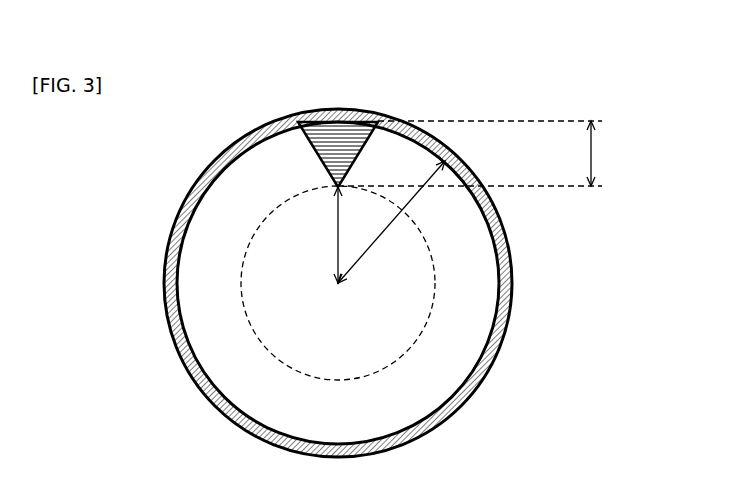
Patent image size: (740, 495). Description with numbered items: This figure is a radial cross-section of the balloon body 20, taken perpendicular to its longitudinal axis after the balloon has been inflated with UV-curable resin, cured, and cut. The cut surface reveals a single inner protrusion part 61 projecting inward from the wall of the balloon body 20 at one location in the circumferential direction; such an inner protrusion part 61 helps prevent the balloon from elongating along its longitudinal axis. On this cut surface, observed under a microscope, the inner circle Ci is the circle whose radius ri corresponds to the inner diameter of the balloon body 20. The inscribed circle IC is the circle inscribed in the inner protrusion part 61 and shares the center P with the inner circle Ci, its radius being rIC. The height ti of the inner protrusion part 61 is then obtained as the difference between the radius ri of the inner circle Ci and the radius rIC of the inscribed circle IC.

The balloon body 20 is at (344, 283).
The inner protrusion part 61 is at (298, 124).
The inscribed circle IC is at (253, 335).
The center P is at (340, 285).
The radius of the inscribed circle rIC is at (338, 228).
The radius of the inner circle ri is at (415, 197).
The inner circle Ci is at (510, 298).
The height of the inner protrusion part ti is at (480, 153).